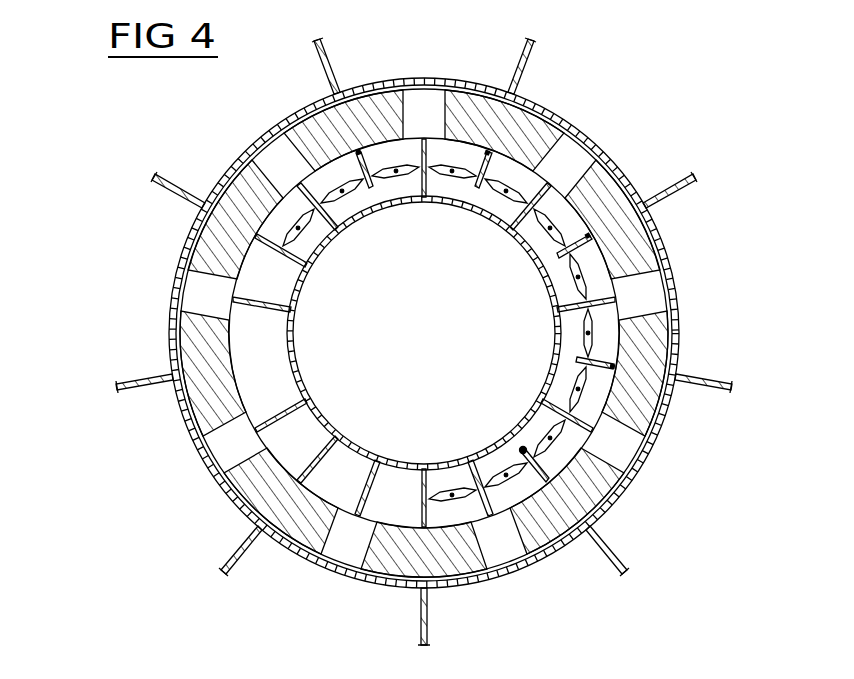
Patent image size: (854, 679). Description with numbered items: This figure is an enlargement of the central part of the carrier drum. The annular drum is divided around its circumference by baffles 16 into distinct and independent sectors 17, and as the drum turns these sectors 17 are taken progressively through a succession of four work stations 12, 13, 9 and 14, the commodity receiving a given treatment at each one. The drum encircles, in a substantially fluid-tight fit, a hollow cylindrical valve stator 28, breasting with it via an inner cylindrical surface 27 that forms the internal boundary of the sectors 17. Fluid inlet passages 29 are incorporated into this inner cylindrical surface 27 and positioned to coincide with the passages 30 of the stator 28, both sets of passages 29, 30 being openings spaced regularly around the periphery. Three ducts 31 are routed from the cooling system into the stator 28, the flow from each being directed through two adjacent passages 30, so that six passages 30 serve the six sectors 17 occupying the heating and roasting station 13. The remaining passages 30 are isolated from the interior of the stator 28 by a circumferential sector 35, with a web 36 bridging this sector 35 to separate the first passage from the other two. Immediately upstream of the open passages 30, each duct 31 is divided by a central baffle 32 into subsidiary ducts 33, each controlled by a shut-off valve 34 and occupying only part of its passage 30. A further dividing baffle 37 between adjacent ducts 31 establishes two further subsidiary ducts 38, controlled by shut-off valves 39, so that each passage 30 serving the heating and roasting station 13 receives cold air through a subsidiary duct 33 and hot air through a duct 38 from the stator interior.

The work station 9 is at (315, 590).
The work station 12 is at (160, 293).
The heating and roasting station 13 is at (656, 172).
The work station 14 is at (175, 460).
The baffle 16 is at (537, 42).
The sector 17 is at (726, 293).
The inner cylindrical surface 27 is at (686, 242).
The valve stator 28 is at (537, 140).
The fluid inlet passage 29 is at (415, 83).
The passage 30 is at (430, 105).
The duct 31 is at (428, 203).
The central baffle 32 is at (397, 200).
The subsidiary duct 33 is at (390, 152).
The shut-off valve 34 is at (365, 200).
The circumferential sector 35 is at (297, 367).
The web 36 is at (325, 462).
The dividing baffle 37 is at (575, 358).
The subsidiary duct 38 is at (298, 185).
The shut-off valve 39 is at (298, 233).